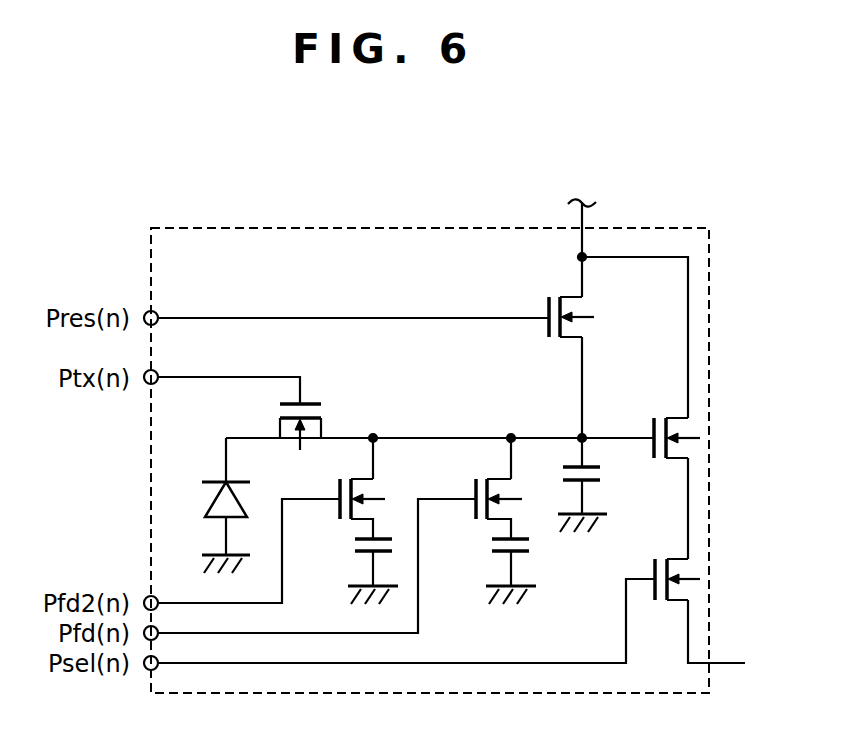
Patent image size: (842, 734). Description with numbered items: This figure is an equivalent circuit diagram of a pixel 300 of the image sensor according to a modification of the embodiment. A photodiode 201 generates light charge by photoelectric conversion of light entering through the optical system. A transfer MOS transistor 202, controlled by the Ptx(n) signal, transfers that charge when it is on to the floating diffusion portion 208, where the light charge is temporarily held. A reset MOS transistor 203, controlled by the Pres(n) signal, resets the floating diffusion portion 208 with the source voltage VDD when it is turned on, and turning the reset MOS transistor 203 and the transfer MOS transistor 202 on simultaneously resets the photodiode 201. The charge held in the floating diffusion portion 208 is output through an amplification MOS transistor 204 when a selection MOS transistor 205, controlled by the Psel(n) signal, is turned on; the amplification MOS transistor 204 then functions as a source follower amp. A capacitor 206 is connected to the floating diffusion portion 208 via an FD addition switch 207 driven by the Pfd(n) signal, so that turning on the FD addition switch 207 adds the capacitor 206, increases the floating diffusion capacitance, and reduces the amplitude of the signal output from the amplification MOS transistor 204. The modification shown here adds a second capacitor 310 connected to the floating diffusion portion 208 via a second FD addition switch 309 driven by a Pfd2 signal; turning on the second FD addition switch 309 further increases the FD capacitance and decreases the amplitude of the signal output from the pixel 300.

The pixel 300 is at (409, 227).
The photodiode 201 is at (214, 476).
The transfer MOS transistor 202 is at (327, 423).
The reset MOS transistor 203 is at (541, 308).
The amplification MOS transistor 204 is at (647, 430).
The selection MOS transistor 205 is at (652, 570).
The capacitor 206 is at (490, 547).
The FD addition switch 207 is at (470, 491).
The floating diffusion portion 208 is at (590, 490).
The second FD addition switch 309 is at (333, 488).
The second capacitor 310 is at (353, 547).